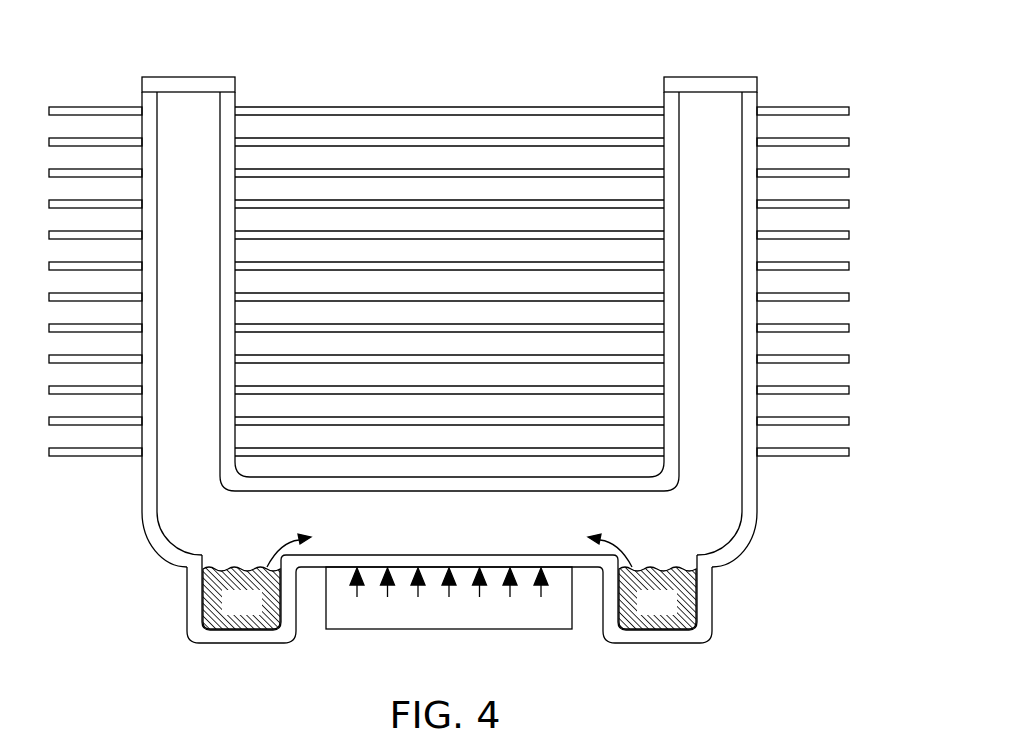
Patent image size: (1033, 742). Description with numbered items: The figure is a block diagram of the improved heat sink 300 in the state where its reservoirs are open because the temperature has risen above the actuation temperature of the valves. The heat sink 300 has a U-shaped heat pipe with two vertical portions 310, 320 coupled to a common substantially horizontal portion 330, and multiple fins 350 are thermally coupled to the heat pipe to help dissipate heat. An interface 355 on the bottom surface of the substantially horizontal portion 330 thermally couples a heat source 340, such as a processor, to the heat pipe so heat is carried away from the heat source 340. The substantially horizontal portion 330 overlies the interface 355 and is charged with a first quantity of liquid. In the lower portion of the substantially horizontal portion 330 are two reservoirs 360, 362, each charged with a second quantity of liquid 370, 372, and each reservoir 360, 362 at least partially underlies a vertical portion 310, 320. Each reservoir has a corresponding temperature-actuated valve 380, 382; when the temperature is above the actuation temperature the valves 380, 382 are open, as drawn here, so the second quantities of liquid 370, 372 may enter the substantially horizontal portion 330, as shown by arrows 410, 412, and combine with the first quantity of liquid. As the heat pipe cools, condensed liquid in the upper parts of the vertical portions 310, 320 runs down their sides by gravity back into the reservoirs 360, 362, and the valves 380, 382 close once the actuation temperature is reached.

The heat sink 300 is at (812, 55).
The vertical portion 310 is at (169, 274).
The vertical portion 320 is at (691, 274).
The substantially horizontal portion 330 is at (430, 529).
The heat source 340 is at (390, 628).
The fins 350 is at (127, 453).
The interface 355 is at (493, 568).
The reservoir 360 is at (187, 607).
The reservoir 362 is at (710, 605).
The second quantity of liquid 370 is at (223, 612).
The second quantity of liquid 372 is at (638, 612).
The temperature-actuated valve 380 is at (212, 555).
The temperature-actuated valve 382 is at (655, 555).
The arrow 410 is at (289, 533).
The arrow 412 is at (610, 532).